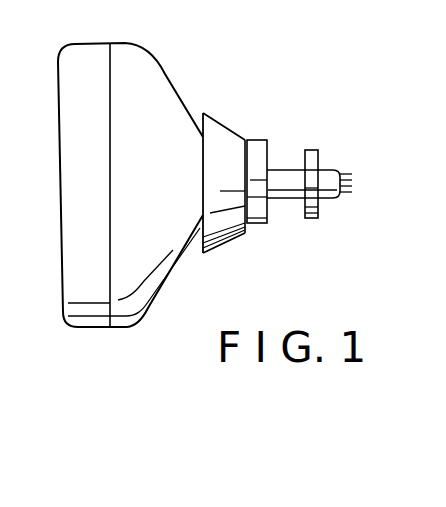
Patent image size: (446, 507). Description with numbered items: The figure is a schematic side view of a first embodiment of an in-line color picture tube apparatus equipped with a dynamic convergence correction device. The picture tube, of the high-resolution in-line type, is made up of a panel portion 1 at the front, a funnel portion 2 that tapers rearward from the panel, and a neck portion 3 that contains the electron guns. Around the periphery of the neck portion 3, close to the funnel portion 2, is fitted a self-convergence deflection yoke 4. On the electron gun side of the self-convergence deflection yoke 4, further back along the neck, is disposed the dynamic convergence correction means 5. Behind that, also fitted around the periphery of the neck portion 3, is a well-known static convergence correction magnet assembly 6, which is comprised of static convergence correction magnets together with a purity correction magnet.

The panel portion 1 is at (88, 43).
The funnel portion 2 is at (163, 73).
The neck portion 3 is at (286, 170).
The self-convergence deflection yoke 4 is at (225, 126).
The dynamic convergence correction means 5 is at (257, 141).
The static convergence correction magnet assembly 6 is at (318, 160).